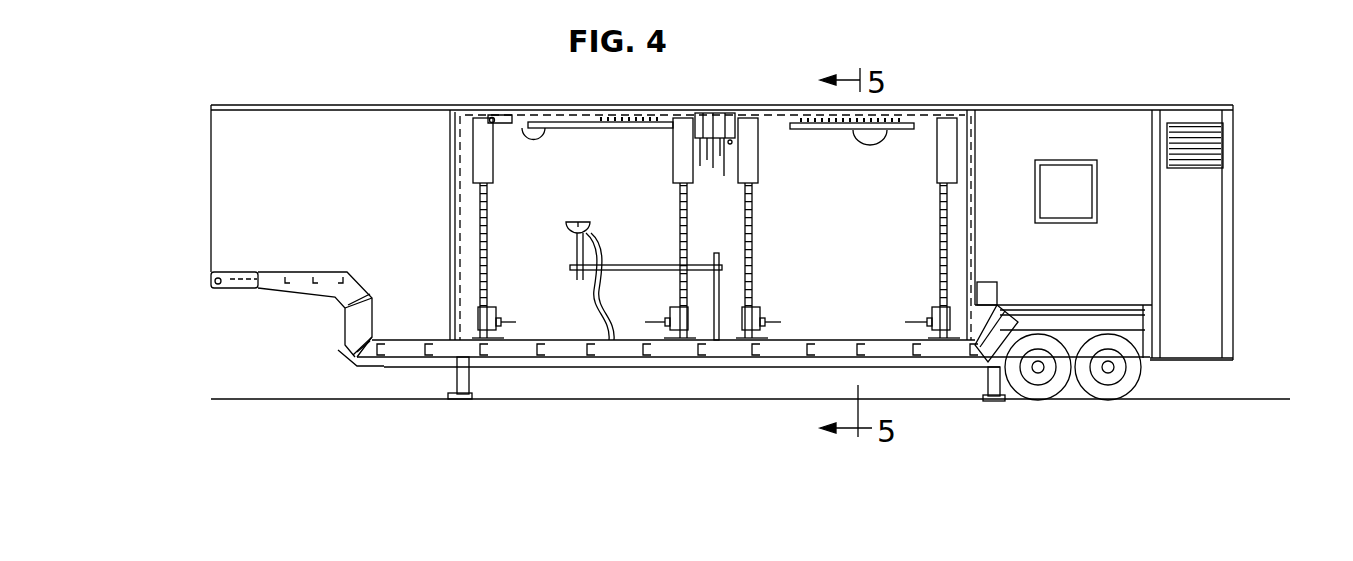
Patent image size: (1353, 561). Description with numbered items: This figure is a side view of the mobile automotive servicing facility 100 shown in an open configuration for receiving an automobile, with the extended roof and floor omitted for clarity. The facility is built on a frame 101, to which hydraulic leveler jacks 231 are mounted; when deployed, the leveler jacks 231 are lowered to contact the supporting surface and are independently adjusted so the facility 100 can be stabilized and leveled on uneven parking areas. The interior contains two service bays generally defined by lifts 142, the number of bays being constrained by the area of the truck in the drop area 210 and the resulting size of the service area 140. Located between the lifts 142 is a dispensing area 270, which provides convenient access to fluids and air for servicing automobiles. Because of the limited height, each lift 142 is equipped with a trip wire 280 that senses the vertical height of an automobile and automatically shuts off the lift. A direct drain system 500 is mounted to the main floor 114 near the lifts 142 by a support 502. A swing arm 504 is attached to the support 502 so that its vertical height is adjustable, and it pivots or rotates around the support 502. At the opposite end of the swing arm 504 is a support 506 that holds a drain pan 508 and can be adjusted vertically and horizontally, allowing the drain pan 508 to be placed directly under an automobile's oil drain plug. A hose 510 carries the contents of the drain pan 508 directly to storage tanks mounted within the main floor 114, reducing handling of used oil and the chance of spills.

The mobile automotive servicing facility 100 is at (1256, 119).
The frame 101 is at (390, 350).
The main floor 114 is at (892, 336).
The service area 140 is at (878, 244).
The lifts 142 is at (687, 127).
The drop area 210 is at (708, 372).
The leveler jacks 231 is at (455, 380).
The dispensing area 270 is at (733, 122).
The trip wire 280 is at (521, 128).
The direct drain system 500 is at (623, 268).
The support 502 is at (718, 318).
The swing arm 504 is at (637, 270).
The support 506 is at (573, 250).
The drain pan 508 is at (583, 220).
The hose 510 is at (603, 304).